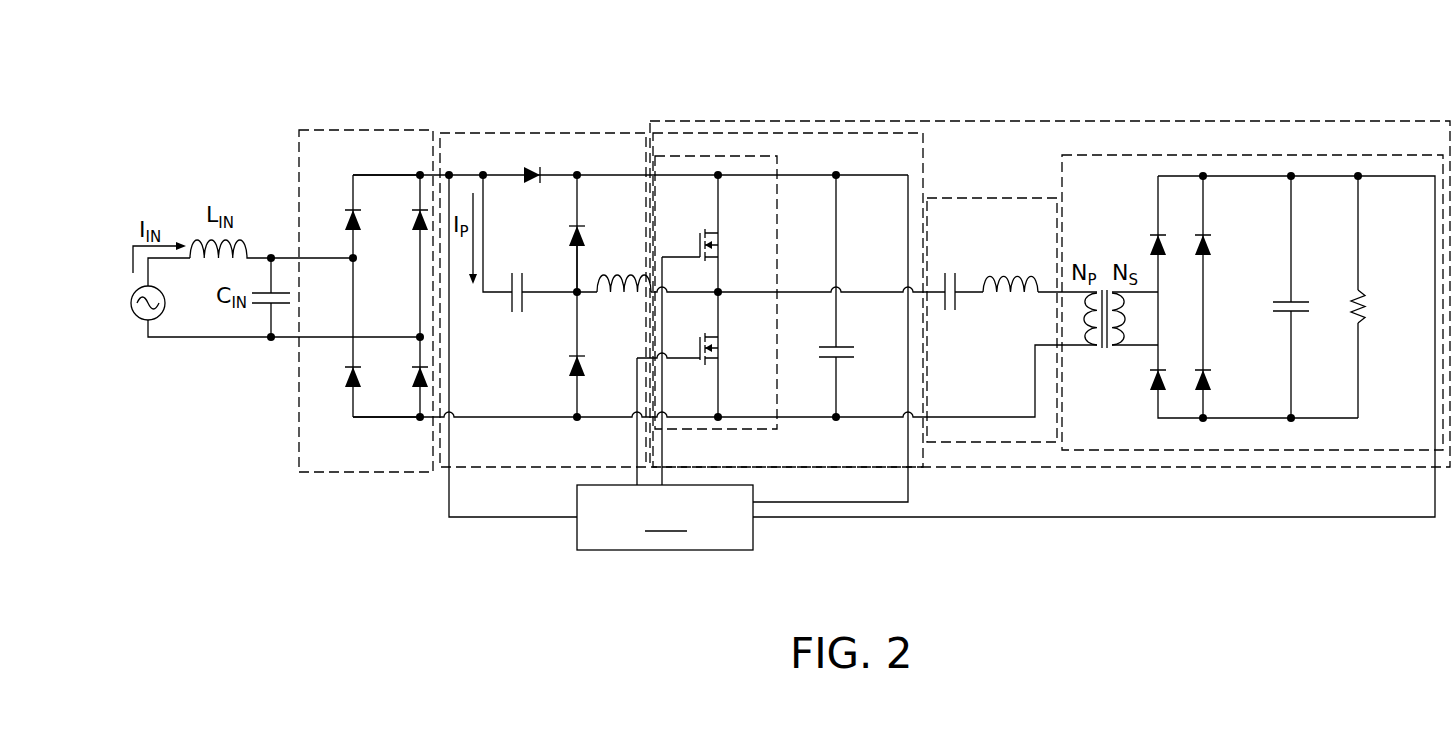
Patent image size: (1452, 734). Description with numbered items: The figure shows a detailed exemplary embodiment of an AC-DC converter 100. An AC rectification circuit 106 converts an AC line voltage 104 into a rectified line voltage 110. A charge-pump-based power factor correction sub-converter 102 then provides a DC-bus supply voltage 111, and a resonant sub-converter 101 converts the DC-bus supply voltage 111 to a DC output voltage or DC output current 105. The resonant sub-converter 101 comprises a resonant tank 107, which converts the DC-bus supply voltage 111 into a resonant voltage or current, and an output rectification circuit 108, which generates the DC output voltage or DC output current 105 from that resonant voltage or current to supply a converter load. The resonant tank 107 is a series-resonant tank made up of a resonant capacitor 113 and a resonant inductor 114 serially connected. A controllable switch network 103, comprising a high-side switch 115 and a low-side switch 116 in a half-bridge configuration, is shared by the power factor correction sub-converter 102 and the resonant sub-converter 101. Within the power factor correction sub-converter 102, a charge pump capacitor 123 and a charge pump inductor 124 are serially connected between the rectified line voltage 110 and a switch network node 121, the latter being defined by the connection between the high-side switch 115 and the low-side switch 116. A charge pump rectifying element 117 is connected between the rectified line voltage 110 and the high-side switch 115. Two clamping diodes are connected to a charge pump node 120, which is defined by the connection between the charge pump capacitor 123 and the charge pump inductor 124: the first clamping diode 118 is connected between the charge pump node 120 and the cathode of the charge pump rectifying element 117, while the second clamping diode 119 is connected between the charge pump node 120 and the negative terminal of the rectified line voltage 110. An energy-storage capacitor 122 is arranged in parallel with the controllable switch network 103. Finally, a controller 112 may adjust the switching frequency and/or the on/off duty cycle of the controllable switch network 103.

The AC-DC converter 100 is at (198, 97).
The resonant sub-converter 101 is at (1240, 121).
The charge-pump-based power factor correction sub-converter 102 is at (858, 133).
The controllable switch network 103 is at (725, 156).
The AC line voltage 104 is at (135, 318).
The DC output voltage or DC output current 105 is at (1413, 322).
The AC rectification circuit 106 is at (365, 129).
The resonant tank 107 is at (1000, 442).
The output rectification circuit 108 is at (1107, 450).
The rectified line voltage 110 is at (451, 172).
The DC-bus supply voltage 111 is at (880, 368).
The controller 112 is at (665, 517).
The resonant capacitor 113 is at (967, 243).
The resonant inductor 114 is at (1028, 243).
The high-side switch 115 is at (697, 190).
The low-side switch 116 is at (712, 363).
The charge pump rectifying element 117 is at (522, 136).
The first clamping diode 118 is at (585, 223).
The second clamping diode 119 is at (575, 378).
The charge pump node 120 is at (579, 257).
The switch network node 121 is at (720, 290).
The energy-storage capacitor 122 is at (826, 360).
The charge pump capacitor 123 is at (512, 298).
The charge pump inductor 124 is at (642, 267).